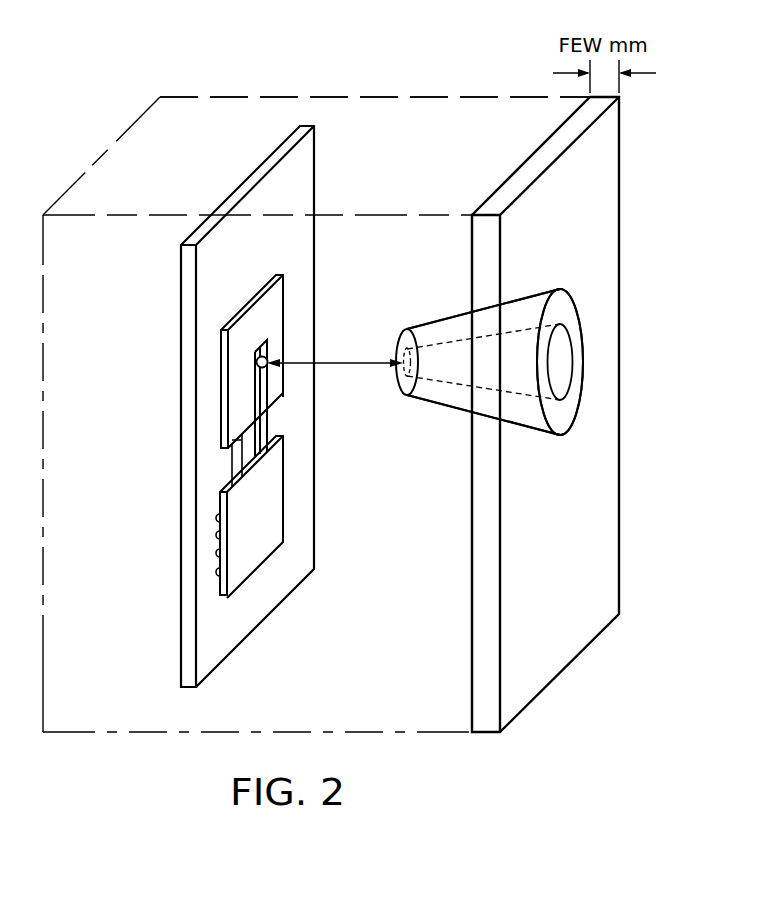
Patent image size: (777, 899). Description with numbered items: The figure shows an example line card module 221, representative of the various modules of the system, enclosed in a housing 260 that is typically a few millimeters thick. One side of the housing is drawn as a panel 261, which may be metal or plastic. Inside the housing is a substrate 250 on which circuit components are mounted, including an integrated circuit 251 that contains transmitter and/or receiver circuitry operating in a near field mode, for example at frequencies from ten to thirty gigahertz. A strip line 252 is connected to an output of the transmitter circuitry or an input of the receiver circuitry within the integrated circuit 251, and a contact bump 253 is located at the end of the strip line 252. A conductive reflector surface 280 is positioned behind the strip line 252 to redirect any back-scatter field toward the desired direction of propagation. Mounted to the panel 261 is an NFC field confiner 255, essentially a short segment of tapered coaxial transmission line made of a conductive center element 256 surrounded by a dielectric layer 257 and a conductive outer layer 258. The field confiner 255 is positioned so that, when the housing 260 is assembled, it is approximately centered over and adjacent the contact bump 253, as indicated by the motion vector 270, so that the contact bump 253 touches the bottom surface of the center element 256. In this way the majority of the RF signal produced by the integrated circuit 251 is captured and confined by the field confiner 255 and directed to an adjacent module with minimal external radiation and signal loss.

The line card module 221 is at (272, 94).
The housing 260 is at (375, 96).
The panel 261 is at (610, 226).
The substrate 250 is at (305, 192).
The conductive reflector surface 280 is at (275, 300).
The strip line 252 is at (262, 422).
The contact bump 253 is at (257, 361).
The integrated circuit 251 is at (270, 507).
The motion vector 270 is at (352, 360).
The NFC field confiner 255 is at (452, 315).
The conductive outer layer 258 is at (533, 436).
The dielectric layer 257 is at (565, 315).
The conductive center element 256 is at (565, 363).